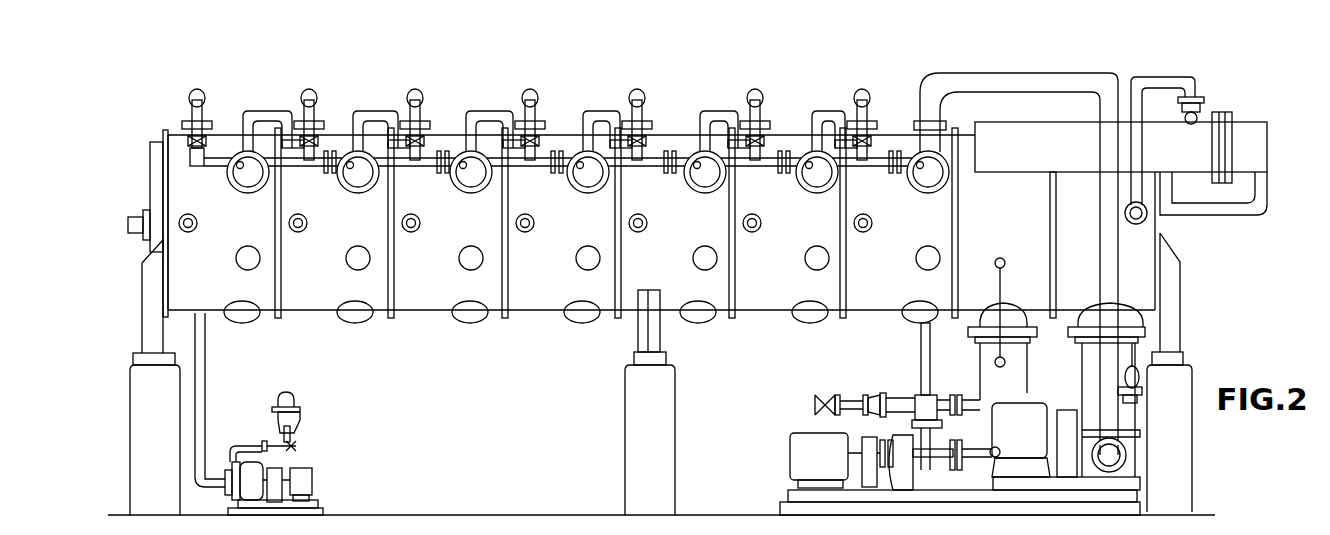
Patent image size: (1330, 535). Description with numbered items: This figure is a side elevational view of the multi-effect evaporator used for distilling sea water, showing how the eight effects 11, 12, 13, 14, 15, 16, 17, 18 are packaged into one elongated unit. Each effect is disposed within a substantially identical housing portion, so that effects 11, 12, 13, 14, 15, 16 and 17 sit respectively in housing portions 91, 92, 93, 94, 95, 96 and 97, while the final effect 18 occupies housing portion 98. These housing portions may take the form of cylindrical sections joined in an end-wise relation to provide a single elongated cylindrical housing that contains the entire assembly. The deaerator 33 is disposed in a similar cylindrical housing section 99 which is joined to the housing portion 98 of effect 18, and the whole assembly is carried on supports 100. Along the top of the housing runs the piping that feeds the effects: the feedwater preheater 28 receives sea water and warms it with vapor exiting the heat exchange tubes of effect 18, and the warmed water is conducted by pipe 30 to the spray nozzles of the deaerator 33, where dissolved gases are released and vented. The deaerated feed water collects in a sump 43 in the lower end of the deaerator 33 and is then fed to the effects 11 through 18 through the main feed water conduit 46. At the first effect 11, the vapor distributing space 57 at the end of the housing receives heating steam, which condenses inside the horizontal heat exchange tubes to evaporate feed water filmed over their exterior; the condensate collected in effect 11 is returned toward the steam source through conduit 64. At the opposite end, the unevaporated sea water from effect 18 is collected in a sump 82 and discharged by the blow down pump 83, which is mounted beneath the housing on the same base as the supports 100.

The effect 11 is at (217, 318).
The effect 12 is at (323, 318).
The effect 13 is at (427, 318).
The effect 14 is at (548, 318).
The effect 15 is at (670, 318).
The effect 16 is at (765, 318).
The effect 17 is at (878, 318).
The effect 18 is at (967, 318).
The feedwater preheater 28 is at (1015, 135).
The pipe 30 is at (1143, 150).
The deaerator 33 is at (1148, 258).
The sump 43 is at (1130, 355).
The main feed water conduit 46 is at (1012, 78).
The vapor distributing space 57 is at (130, 217).
The conduit 64 is at (205, 424).
The sump 82 is at (1000, 378).
The blow down pump 83 is at (903, 483).
The housing portion 91 is at (214, 227).
The housing portion 92 is at (326, 227).
The housing portion 93 is at (446, 227).
The housing portion 94 is at (554, 227).
The housing portion 95 is at (664, 227).
The housing portion 96 is at (784, 227).
The housing portion 97 is at (899, 227).
The housing portion 98 is at (994, 242).
The housing section 99 is at (1068, 259).
The supports 100 is at (150, 440).